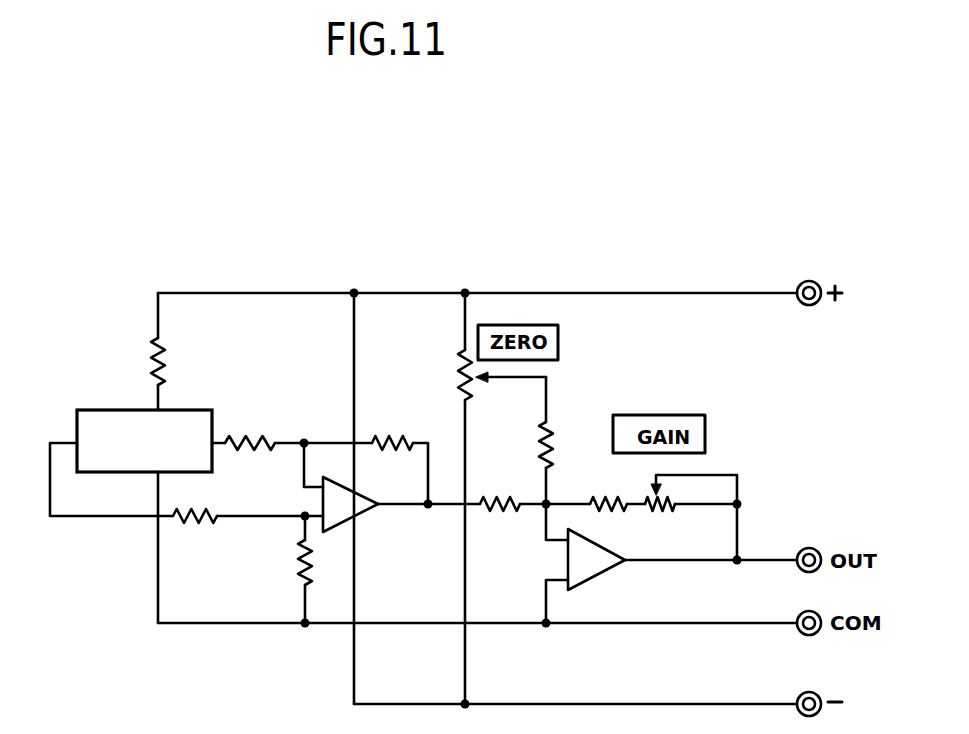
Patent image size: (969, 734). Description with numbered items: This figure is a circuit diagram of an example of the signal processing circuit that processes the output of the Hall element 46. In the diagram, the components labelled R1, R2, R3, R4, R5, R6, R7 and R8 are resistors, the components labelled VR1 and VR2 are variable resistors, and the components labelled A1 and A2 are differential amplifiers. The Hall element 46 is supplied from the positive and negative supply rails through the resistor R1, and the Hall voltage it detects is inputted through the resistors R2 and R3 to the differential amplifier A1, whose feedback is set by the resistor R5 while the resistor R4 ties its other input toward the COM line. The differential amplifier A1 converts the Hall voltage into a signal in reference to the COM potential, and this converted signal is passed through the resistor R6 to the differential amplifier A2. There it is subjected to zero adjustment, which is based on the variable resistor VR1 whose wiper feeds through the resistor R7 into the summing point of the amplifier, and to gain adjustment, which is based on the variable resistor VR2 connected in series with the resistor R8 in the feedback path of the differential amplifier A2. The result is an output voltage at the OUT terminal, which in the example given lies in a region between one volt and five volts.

The Hall element 46 is at (110, 414).
The resistor R1 is at (179, 361).
The resistor R2 is at (250, 429).
The resistor R3 is at (195, 502).
The resistor R4 is at (280, 562).
The resistor R5 is at (391, 428).
The resistor R6 is at (500, 521).
The resistor R7 is at (566, 445).
The resistor R8 is at (607, 488).
The variable resistor VR1 is at (431, 375).
The variable resistor VR2 is at (665, 520).
The differential amplifier A1 is at (341, 492).
The differential amplifier A2 is at (586, 549).